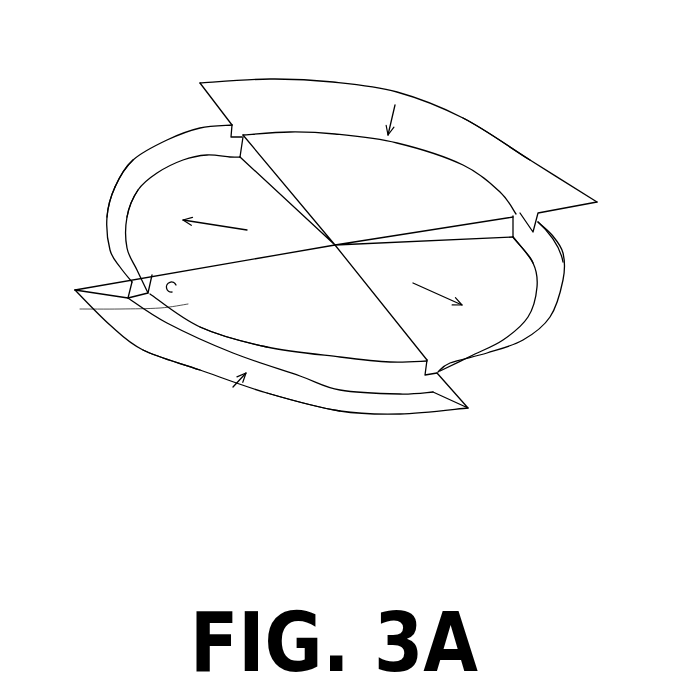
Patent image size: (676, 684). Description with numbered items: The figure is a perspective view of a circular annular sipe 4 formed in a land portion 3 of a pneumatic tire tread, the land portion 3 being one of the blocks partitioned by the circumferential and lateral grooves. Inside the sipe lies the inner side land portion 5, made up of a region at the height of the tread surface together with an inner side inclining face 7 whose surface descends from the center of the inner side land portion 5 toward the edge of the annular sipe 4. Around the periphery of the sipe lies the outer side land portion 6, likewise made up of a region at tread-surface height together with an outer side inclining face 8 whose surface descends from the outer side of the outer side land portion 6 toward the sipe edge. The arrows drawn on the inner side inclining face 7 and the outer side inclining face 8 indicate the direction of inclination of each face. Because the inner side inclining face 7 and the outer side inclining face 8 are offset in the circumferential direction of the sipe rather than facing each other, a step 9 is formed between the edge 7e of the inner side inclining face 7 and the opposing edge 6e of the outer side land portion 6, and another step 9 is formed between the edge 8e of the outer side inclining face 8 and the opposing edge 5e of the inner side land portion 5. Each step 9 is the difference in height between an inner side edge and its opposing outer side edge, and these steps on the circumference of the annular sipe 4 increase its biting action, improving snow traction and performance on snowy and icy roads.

The land portion 3 is at (557, 82).
The annular sipe 4 is at (240, 133).
The inner side land portion 5 is at (300, 143).
The edge of the inner side land portion 5e is at (353, 135).
The outer side land portion 6 is at (200, 113).
The edge of the outer side land portion 6e is at (117, 182).
The inner side inclining face 7 is at (195, 182).
The edge of the inner side inclining face 7e is at (130, 220).
The outer side inclining face 8 is at (543, 173).
The edge of the outer side inclining face 8e is at (167, 337).
The step 9 is at (143, 167).